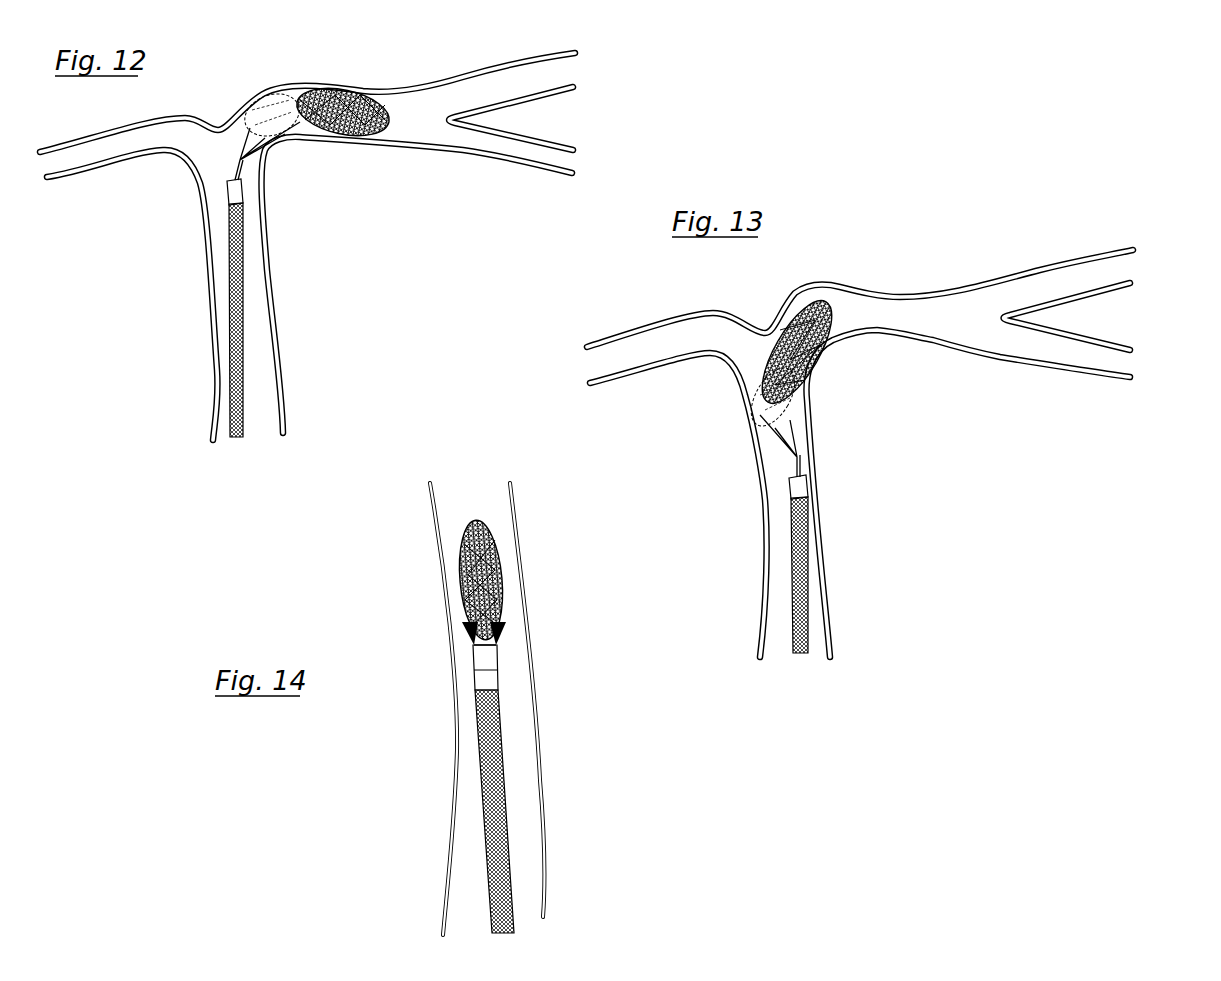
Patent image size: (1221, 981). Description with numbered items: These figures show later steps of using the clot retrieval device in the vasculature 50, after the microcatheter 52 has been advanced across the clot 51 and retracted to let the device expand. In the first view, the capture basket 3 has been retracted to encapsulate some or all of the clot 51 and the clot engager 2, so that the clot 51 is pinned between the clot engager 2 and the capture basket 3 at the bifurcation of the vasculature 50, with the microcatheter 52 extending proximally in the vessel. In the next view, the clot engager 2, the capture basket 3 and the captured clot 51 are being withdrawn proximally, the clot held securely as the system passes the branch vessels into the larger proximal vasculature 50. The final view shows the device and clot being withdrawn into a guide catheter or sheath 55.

In FIG. 12, the clot engager 2 is at (248, 115).
In FIG. 13, the clot engager 2 is at (793, 437).
In FIG. 14, the clot engager 2 is at (497, 633).
In FIG. 12, the capture basket 3 is at (357, 95).
In FIG. 13, the capture basket 3 is at (797, 300).
In FIG. 14, the capture basket 3 is at (470, 537).
In FIG. 12, the vasculature 50 is at (173, 148).
In FIG. 13, the vasculature 50 is at (717, 337).
In FIG. 14, the vasculature 50 is at (467, 765).
In FIG. 12, the clot 51 is at (280, 130).
In FIG. 13, the clot 51 is at (762, 400).
In FIG. 14, the clot 51 is at (473, 646).
In FIG. 12, the microcatheter 52 is at (232, 283).
In FIG. 13, the microcatheter 52 is at (795, 568).
In FIG. 14, the guide catheter or sheath 55 is at (497, 692).